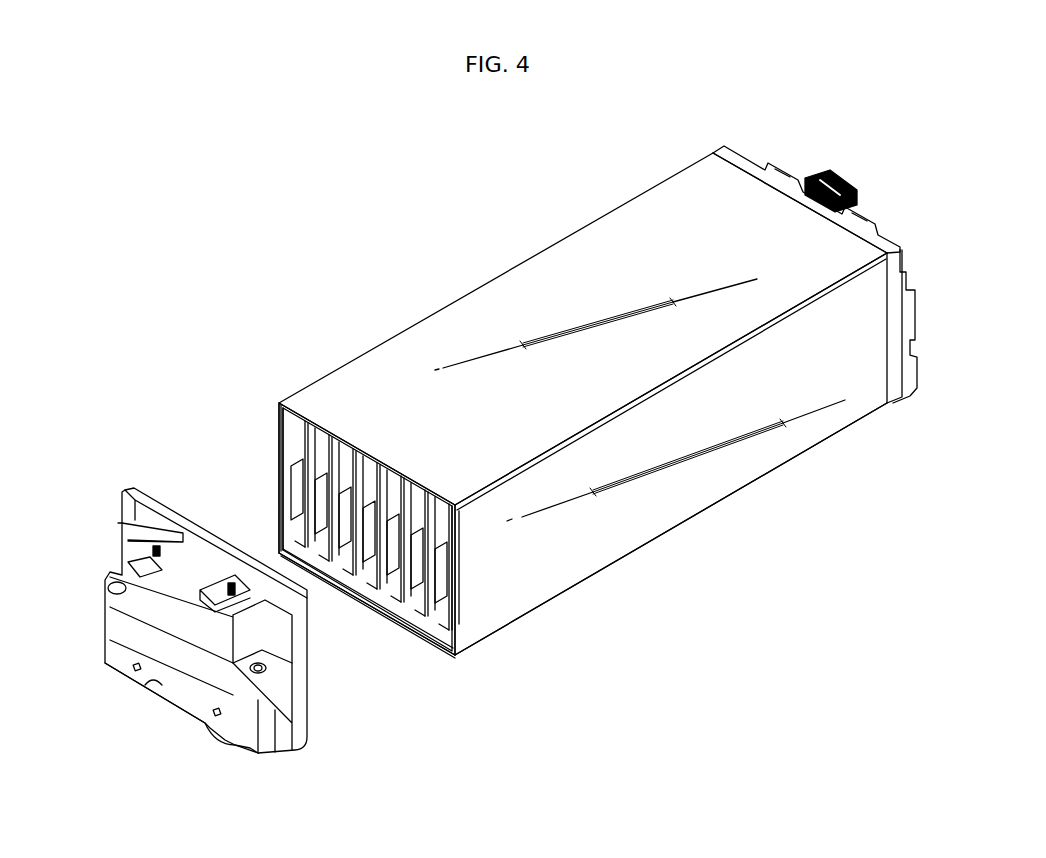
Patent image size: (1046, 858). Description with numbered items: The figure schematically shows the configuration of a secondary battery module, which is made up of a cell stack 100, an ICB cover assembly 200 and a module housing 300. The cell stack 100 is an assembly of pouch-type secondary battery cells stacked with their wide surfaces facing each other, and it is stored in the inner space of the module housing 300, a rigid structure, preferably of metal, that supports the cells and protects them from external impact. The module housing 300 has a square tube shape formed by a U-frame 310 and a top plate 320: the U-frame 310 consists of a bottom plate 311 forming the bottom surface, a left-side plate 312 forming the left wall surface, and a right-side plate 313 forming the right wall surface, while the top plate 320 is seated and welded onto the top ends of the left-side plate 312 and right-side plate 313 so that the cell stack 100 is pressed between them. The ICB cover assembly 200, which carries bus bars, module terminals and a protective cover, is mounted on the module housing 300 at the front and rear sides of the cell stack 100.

The cell stack 100 is at (284, 444).
The ICB cover assembly 200 is at (869, 184).
The module housing 300 is at (833, 662).
The U-frame 310 is at (680, 535).
The bottom plate 311 is at (420, 620).
The left-side plate 312 is at (288, 512).
The right-side plate 313 is at (550, 582).
The top plate 320 is at (488, 272).